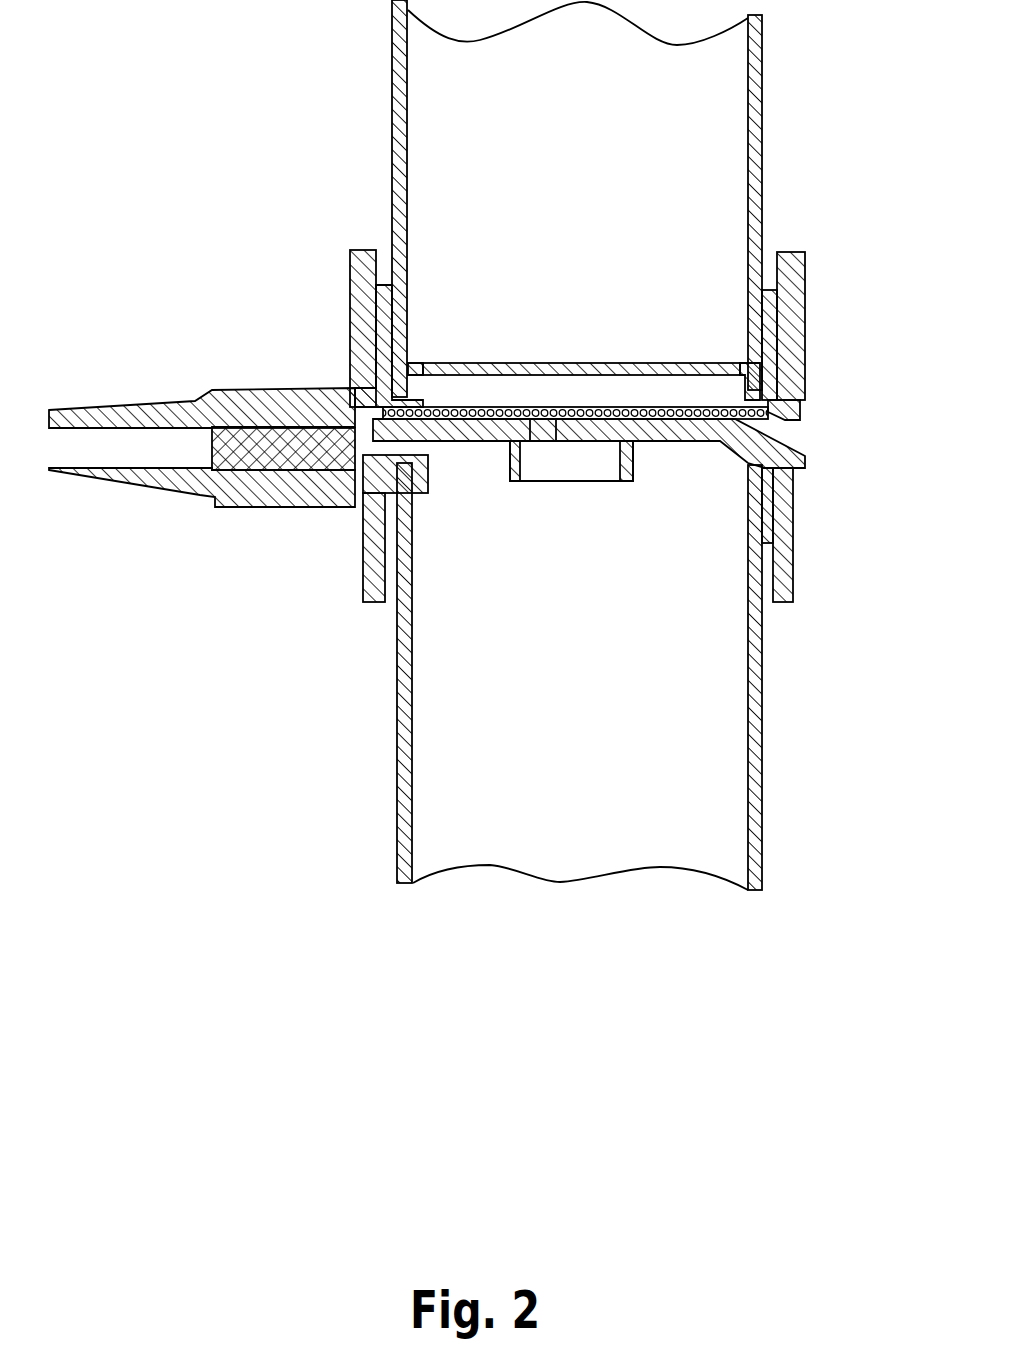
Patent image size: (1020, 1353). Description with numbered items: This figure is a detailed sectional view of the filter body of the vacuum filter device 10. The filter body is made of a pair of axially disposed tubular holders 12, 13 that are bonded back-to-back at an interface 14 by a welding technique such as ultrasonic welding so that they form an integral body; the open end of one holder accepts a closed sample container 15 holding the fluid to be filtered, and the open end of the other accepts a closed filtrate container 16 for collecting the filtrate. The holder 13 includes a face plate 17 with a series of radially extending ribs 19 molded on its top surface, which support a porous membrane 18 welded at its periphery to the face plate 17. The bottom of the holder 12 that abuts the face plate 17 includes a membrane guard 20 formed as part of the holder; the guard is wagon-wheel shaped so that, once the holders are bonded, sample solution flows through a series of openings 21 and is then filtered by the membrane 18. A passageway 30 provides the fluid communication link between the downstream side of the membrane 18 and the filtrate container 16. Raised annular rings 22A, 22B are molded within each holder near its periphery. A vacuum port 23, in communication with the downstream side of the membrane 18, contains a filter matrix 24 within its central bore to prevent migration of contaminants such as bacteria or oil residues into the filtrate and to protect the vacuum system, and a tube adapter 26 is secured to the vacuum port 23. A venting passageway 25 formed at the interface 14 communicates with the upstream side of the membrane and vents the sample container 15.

The vacuum filter device 10 is at (226, 130).
The tubular holder 12 is at (803, 290).
The tubular holder 13 is at (793, 592).
The interface 14 is at (352, 386).
The sample container 15 is at (765, 86).
The filtrate container 16 is at (763, 866).
The face plate 17 is at (763, 460).
The porous membrane 18 is at (352, 292).
The radially extending ribs 19 is at (556, 419).
The membrane guard 20 is at (447, 362).
The openings 21 is at (518, 362).
The raised annular ring 22A is at (752, 366).
The raised annular ring 22B is at (762, 537).
The vacuum port 23 is at (285, 477).
The filter matrix 24 is at (222, 452).
The venting passageway 25 is at (795, 413).
The tube adapter 26 is at (353, 503).
The passageway 30 is at (592, 482).